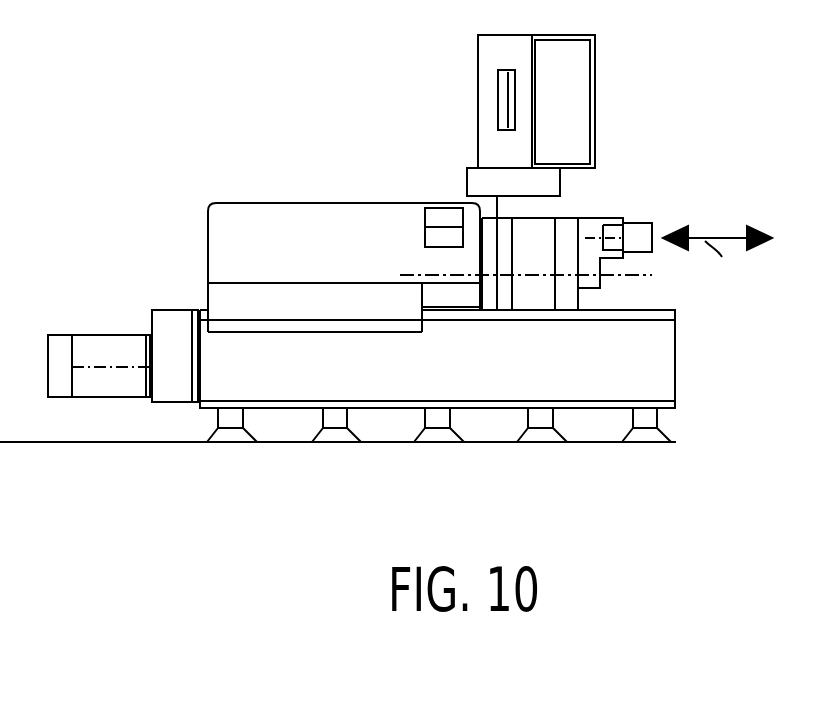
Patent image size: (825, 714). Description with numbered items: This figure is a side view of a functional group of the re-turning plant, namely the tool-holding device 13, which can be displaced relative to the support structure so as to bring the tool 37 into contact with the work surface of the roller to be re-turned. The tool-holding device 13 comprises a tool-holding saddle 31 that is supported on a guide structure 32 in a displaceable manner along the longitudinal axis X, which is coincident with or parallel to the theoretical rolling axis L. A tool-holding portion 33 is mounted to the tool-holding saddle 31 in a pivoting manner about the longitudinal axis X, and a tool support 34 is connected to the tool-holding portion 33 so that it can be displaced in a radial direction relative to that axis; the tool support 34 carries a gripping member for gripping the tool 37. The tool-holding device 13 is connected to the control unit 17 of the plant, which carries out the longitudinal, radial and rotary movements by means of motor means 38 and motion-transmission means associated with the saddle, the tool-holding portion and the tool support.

The tool-holding device 13 is at (302, 188).
The control unit 17 is at (488, 143).
The tool-holding saddle 31 is at (533, 292).
The guide structure 32 is at (483, 312).
The tool-holding portion 33 is at (632, 228).
The tool support 34 is at (623, 240).
The tool 37 is at (650, 223).
The motor means 38 is at (100, 352).